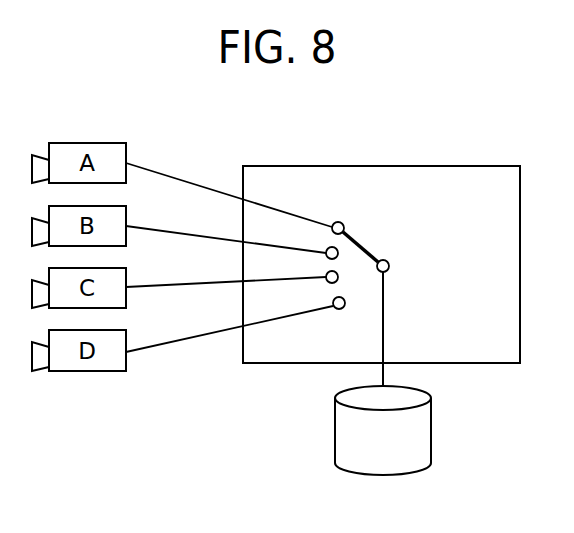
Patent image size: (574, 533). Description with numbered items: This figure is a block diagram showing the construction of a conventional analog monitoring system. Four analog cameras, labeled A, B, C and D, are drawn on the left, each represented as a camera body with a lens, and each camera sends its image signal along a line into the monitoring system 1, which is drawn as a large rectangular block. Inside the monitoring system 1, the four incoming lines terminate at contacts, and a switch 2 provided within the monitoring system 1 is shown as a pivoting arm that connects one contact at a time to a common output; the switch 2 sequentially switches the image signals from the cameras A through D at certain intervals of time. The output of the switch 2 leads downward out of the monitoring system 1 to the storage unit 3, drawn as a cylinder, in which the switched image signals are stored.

The monitoring system 1 is at (302, 166).
The switch 2 is at (366, 241).
The storage unit 3 is at (418, 428).